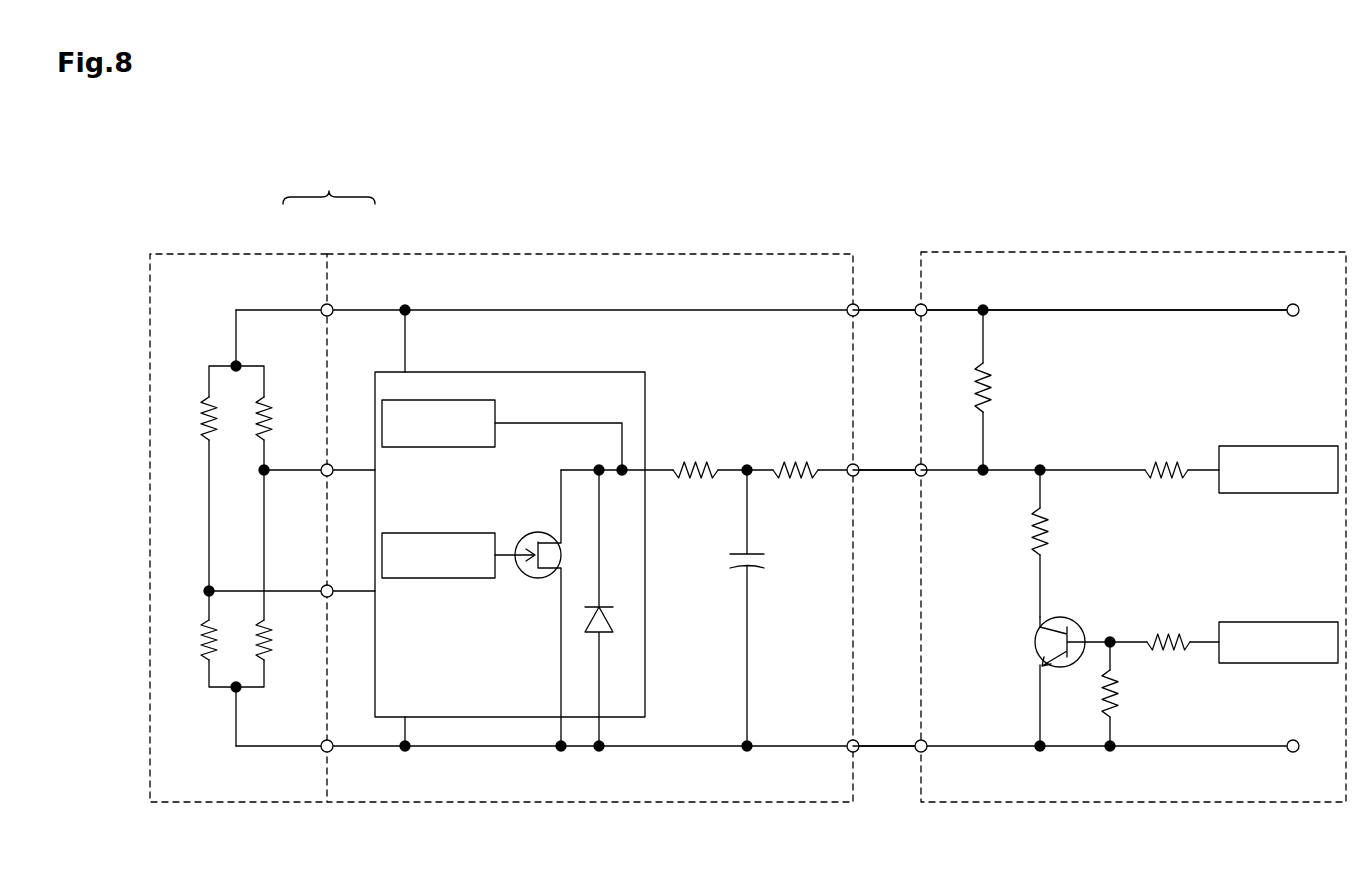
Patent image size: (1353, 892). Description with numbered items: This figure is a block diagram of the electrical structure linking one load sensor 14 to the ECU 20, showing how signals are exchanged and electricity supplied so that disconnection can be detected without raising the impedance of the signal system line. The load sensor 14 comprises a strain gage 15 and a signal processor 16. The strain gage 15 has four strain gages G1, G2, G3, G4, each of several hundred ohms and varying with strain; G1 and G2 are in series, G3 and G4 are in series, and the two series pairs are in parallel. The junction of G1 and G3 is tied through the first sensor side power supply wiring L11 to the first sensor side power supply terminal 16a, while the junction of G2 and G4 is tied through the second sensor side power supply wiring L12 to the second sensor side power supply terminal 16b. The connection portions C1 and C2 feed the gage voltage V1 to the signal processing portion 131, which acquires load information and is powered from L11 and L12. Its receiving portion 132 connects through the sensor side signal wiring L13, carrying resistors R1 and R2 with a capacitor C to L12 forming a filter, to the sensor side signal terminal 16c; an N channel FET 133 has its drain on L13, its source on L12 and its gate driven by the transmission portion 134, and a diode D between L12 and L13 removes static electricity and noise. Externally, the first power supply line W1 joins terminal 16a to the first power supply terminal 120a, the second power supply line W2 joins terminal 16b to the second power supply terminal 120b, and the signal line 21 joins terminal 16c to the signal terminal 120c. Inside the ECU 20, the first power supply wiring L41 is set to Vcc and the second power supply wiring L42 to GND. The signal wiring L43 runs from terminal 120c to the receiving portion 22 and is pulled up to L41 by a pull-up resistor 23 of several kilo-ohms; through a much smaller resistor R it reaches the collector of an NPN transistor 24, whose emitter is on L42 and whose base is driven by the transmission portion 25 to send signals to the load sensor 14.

The load sensor 14 is at (329, 181).
The strain gage 15 is at (268, 254).
The signal processor 16 is at (390, 254).
The ECU 20 is at (975, 252).
The strain gage G1 is at (209, 400).
The strain gage G2 is at (209, 622).
The strain gage G3 is at (294, 402).
The strain gage G4 is at (268, 624).
The connection portion C1 is at (207, 589).
The connection portion C2 is at (270, 466).
The gage voltage V1 is at (308, 531).
The signal processing portion 131 is at (643, 373).
The receiving portion 132 is at (508, 393).
The N channel type FET 133 is at (520, 535).
The transmission portion 134 is at (448, 533).
The first sensor side power supply wiring L11 is at (578, 308).
The second sensor side power supply wiring L12 is at (646, 749).
The sensor side signal wiring L13 is at (646, 455).
The resistor R1 is at (716, 464).
The resistor R2 is at (818, 464).
The capacitor C is at (752, 568).
The diode D is at (606, 625).
The first sensor side power supply terminal 16a is at (848, 306).
The second sensor side power supply terminal 16b is at (848, 742).
The sensor side signal terminal 16c is at (850, 475).
The first power supply line W1 is at (888, 306).
The second power supply line W2 is at (888, 742).
The signal line 21 is at (888, 466).
The first power supply terminal 120a is at (926, 305).
The second power supply terminal 120b is at (926, 742).
The signal terminal 120c is at (924, 476).
The first power supply wiring L41 is at (1130, 309).
The second power supply wiring L42 is at (1160, 749).
The signal wiring L43 is at (1093, 466).
The element Vcc is at (1289, 294).
The element GND is at (1299, 730).
The pull-up resistor 23 is at (993, 390).
The resistor R is at (1048, 540).
The receiving portion 22 is at (1272, 446).
The NPN type transistor 24 is at (1074, 620).
The transmission portion 25 is at (1272, 624).